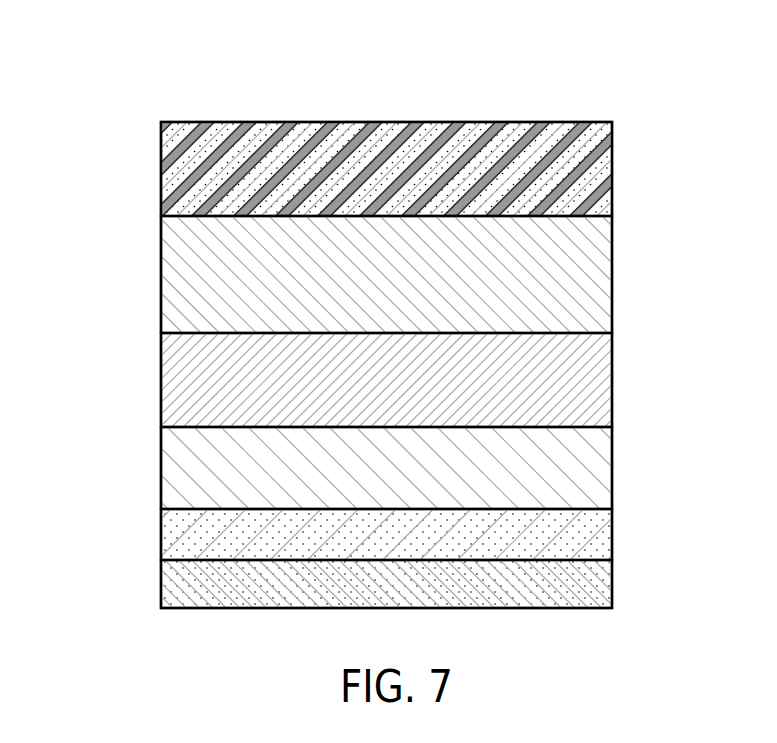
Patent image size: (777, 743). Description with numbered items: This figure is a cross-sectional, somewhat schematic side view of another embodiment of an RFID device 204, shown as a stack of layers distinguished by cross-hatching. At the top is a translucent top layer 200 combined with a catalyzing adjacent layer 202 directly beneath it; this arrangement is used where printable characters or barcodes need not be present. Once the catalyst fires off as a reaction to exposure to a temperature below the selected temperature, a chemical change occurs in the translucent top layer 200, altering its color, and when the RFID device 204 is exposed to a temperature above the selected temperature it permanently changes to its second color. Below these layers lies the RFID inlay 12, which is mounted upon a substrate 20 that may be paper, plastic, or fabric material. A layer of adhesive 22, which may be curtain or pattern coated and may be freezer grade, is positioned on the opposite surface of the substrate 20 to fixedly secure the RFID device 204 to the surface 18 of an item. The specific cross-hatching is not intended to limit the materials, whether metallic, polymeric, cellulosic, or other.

The RFID device 204 is at (131, 97).
The translucent top layer 200 is at (612, 169).
The catalyzing adjacent layer 202 is at (612, 277).
The RFID inlay 12 is at (612, 378).
The substrate 20 is at (612, 468).
The layer of adhesive 22 is at (612, 534).
The surface 18 is at (612, 586).